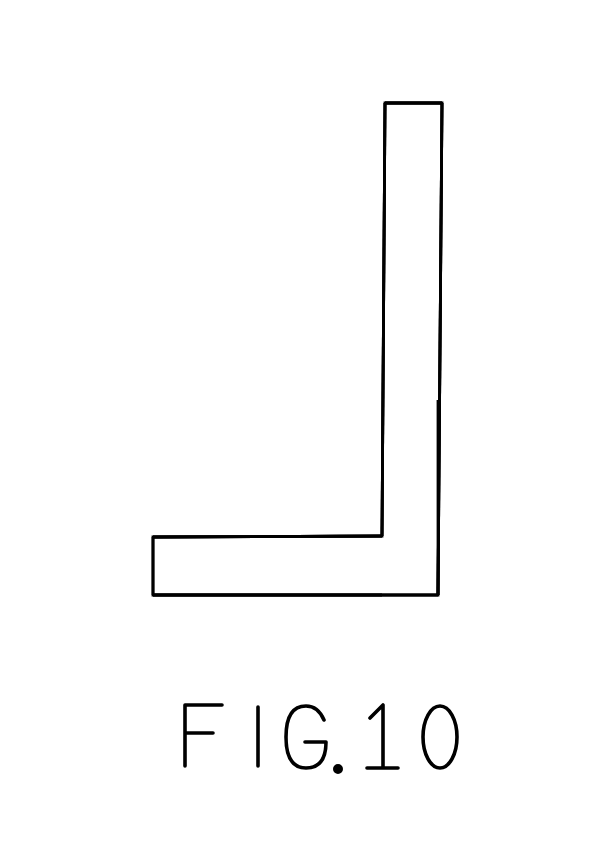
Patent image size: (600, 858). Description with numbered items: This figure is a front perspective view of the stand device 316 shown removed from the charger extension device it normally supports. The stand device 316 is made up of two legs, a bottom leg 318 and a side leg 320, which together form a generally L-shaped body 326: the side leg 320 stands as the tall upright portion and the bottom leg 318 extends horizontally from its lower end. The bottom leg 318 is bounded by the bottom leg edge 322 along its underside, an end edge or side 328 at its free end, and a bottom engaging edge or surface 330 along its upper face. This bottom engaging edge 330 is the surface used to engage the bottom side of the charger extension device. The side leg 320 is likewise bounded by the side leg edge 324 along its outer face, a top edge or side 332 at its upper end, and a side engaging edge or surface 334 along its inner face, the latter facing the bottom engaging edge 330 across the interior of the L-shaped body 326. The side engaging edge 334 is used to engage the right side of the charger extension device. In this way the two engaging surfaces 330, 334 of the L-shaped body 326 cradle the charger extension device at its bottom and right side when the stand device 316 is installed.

The stand device 316 is at (225, 250).
The bottom leg 318 is at (195, 567).
The side leg 320 is at (420, 316).
The bottom leg edge 322 is at (283, 596).
The side leg edge 324 is at (442, 217).
The L-shaped body 326 is at (480, 498).
The end edge 328 is at (153, 578).
The bottom engaging edge 330 is at (228, 536).
The top edge 332 is at (410, 101).
The side engaging edge 334 is at (384, 230).